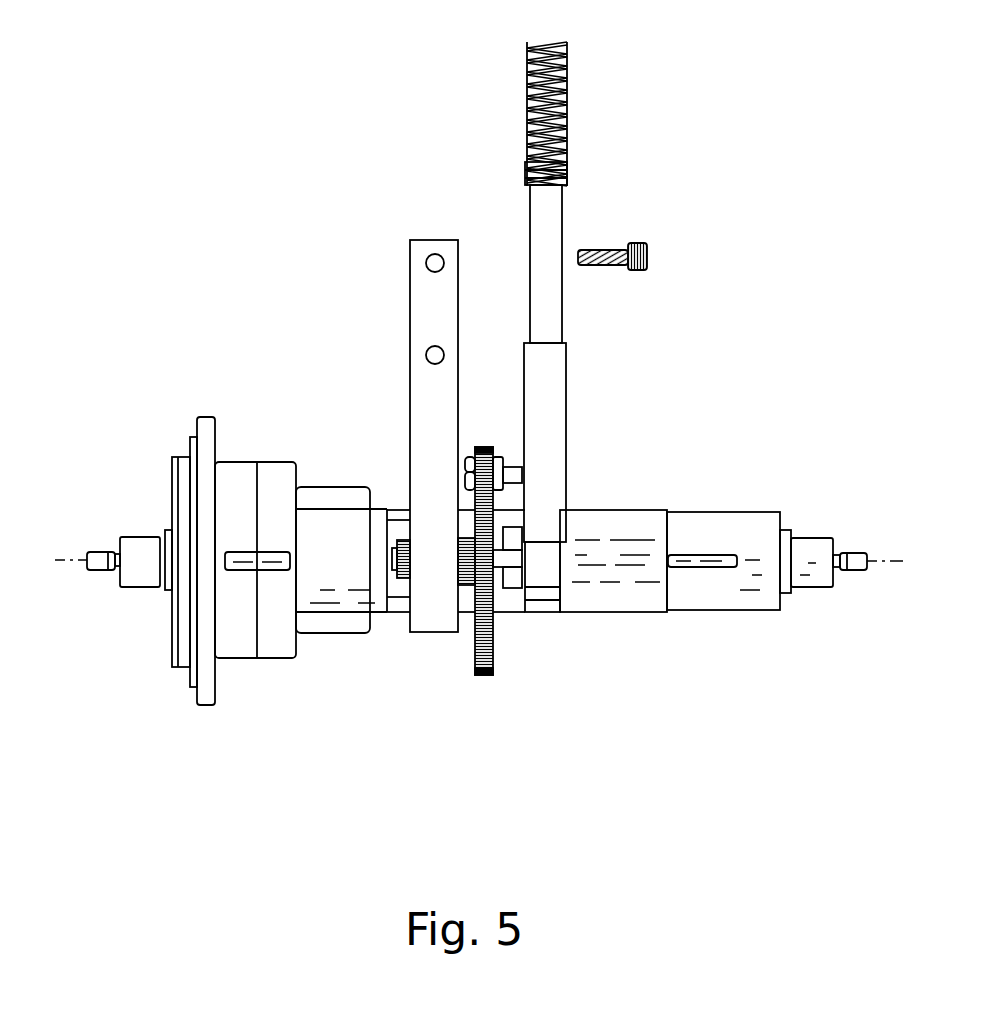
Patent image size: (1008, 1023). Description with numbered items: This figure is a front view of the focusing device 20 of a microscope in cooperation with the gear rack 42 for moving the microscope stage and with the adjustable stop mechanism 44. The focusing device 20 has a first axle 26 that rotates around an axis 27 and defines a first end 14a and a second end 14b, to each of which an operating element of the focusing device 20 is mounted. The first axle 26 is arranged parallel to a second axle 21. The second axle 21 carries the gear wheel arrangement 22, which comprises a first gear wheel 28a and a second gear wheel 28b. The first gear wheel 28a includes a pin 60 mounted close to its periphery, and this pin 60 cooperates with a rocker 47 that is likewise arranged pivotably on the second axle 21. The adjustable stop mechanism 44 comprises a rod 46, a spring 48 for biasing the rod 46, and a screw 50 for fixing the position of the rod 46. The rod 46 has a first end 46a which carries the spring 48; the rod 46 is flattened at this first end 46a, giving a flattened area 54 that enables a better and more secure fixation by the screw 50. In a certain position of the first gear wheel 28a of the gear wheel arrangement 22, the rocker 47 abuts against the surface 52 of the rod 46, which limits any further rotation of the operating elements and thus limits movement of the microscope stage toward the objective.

The first end 14a is at (100, 558).
The second end 14b is at (855, 560).
The focusing device 20 is at (255, 258).
The second axle 21 is at (272, 562).
The gear wheel arrangement 22 is at (489, 678).
The first axle 26 is at (142, 563).
The axis 27 is at (65, 563).
The first gear wheel 28a is at (497, 635).
The second gear wheel 28b is at (402, 583).
The gear rack 42 is at (428, 463).
The adjustable stop mechanism 44 is at (513, 225).
The rod 46 is at (547, 497).
The first end 46a is at (527, 165).
The rocker 47 is at (510, 577).
The spring 48 is at (558, 125).
The screw 50 is at (647, 268).
The surface 52 is at (565, 553).
The flattened area 54 is at (545, 212).
The pin 60 is at (510, 470).